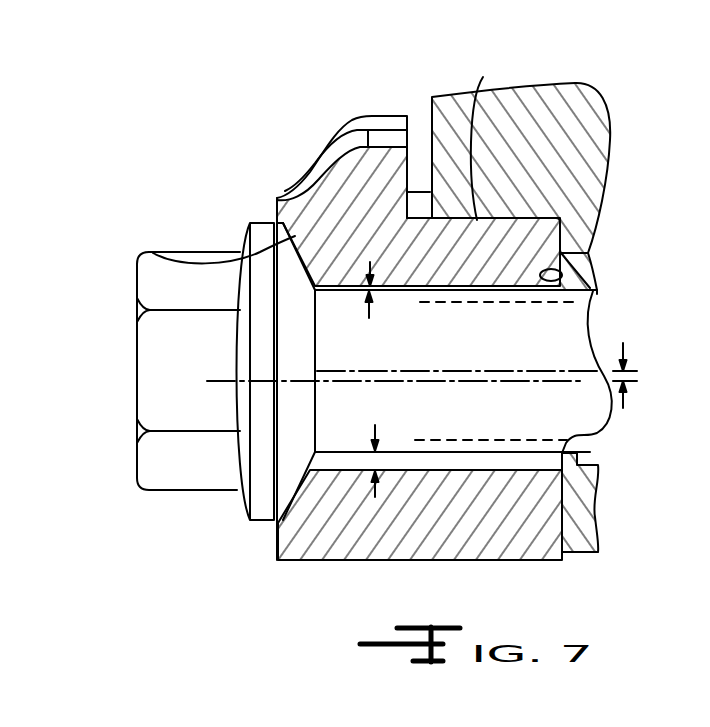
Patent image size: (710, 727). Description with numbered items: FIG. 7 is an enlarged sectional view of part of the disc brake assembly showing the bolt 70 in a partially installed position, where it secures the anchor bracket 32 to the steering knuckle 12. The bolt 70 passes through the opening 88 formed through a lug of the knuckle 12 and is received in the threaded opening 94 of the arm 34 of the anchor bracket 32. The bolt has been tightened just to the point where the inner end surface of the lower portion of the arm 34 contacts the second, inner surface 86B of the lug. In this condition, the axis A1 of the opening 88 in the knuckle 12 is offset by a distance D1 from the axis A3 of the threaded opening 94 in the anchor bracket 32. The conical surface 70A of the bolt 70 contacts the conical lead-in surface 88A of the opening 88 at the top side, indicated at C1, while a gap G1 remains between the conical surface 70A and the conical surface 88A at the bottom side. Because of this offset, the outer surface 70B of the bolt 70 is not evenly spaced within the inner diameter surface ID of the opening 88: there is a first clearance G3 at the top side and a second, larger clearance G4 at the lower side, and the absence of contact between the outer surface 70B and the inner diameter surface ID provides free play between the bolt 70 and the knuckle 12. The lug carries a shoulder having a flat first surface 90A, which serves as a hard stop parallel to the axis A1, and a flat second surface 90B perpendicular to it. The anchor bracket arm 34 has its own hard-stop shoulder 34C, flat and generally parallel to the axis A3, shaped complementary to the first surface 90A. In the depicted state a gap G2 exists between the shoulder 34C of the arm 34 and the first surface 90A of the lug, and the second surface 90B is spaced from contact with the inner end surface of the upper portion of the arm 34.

The bolt 70 is at (180, 243).
The conical surface of the bolt 70A is at (153, 253).
The outer surface of the bolt 70B is at (345, 453).
The opening 88 is at (583, 435).
The conical lead-in surface 88A is at (296, 250).
The top side contact location C1 is at (292, 228).
The second surface of the shoulder 90B is at (410, 153).
The first surface of the shoulder 90A is at (501, 139).
The arm 34 is at (562, 110).
The shoulder 34C is at (437, 282).
The gap G2 is at (511, 205).
The second surface of the lug 86B is at (589, 253).
The threaded opening 94 is at (597, 293).
The axis of the threaded opening A3 is at (528, 371).
The axis of the opening A1 is at (488, 381).
The offset distance D1 is at (637, 378).
The first clearance G3 is at (370, 318).
The second clearance G4 is at (380, 463).
The gap G1 is at (300, 504).
The steering knuckle 12 is at (492, 550).
The anchor bracket 32 is at (604, 516).
The inner diameter surface ID is at (490, 462).